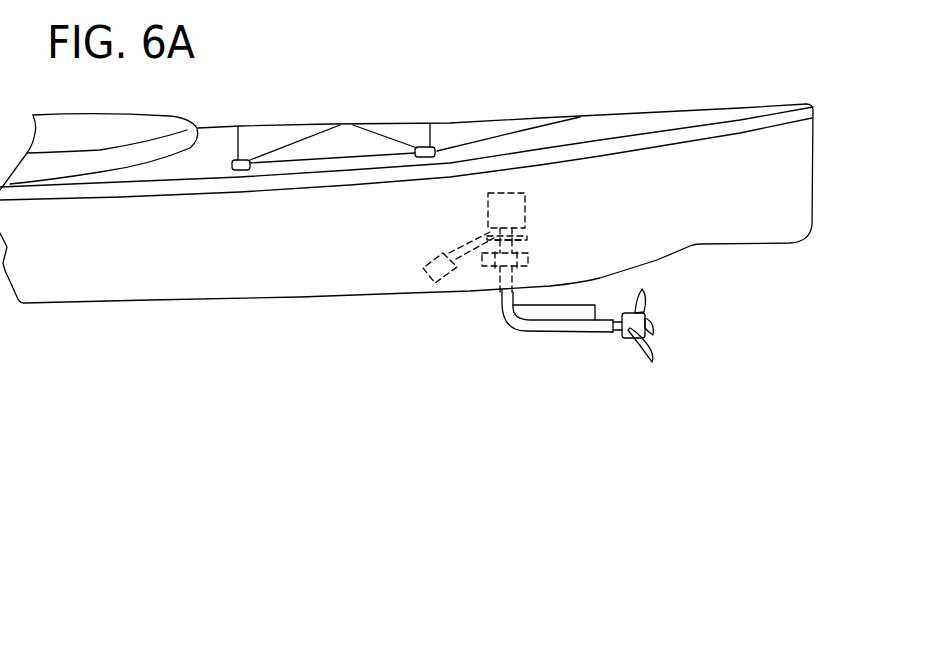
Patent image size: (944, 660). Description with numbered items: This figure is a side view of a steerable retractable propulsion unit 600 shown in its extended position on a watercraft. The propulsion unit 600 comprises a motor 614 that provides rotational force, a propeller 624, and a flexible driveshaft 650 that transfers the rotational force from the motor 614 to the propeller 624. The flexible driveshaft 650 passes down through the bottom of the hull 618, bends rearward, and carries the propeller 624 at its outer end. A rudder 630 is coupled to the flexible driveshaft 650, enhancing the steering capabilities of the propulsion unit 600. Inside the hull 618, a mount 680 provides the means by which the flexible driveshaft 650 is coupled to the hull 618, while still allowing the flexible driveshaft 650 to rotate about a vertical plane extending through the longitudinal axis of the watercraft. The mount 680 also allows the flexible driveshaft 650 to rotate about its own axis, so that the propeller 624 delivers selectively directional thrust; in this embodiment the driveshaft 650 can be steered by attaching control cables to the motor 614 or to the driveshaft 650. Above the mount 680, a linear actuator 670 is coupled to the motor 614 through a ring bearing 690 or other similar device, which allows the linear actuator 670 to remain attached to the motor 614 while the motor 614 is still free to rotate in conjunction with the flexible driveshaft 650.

The steerable retractable propulsion unit 600 is at (361, 362).
The motor 614 is at (505, 216).
The hull 618 is at (119, 267).
The propeller 624 is at (655, 352).
The rudder 630 is at (565, 313).
The flexible driveshaft 650 is at (542, 327).
The linear actuator 670 is at (425, 258).
The mount 680 is at (533, 253).
The ring bearing 690 is at (489, 227).